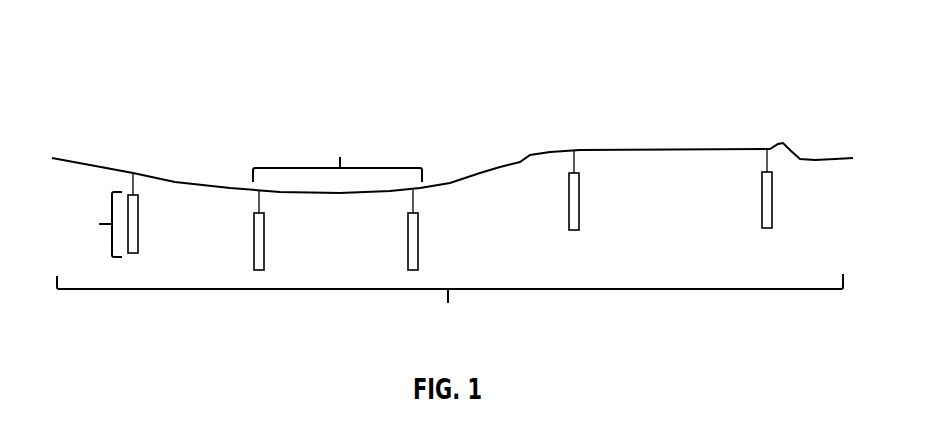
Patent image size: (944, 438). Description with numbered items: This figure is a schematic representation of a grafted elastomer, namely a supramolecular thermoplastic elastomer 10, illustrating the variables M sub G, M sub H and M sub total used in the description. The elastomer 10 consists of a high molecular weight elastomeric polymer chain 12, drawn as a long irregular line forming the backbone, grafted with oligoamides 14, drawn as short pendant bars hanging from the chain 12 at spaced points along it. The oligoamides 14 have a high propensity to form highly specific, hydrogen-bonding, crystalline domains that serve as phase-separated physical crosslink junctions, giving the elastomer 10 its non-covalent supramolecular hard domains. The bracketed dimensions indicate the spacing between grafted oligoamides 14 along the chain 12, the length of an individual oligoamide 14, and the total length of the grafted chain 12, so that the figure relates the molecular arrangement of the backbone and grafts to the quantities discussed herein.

The supramolecular thermoplastic elastomer 10 is at (281, 71).
The elastomeric polymer chain 12 is at (530, 153).
The oligoamide 14 is at (579, 205).